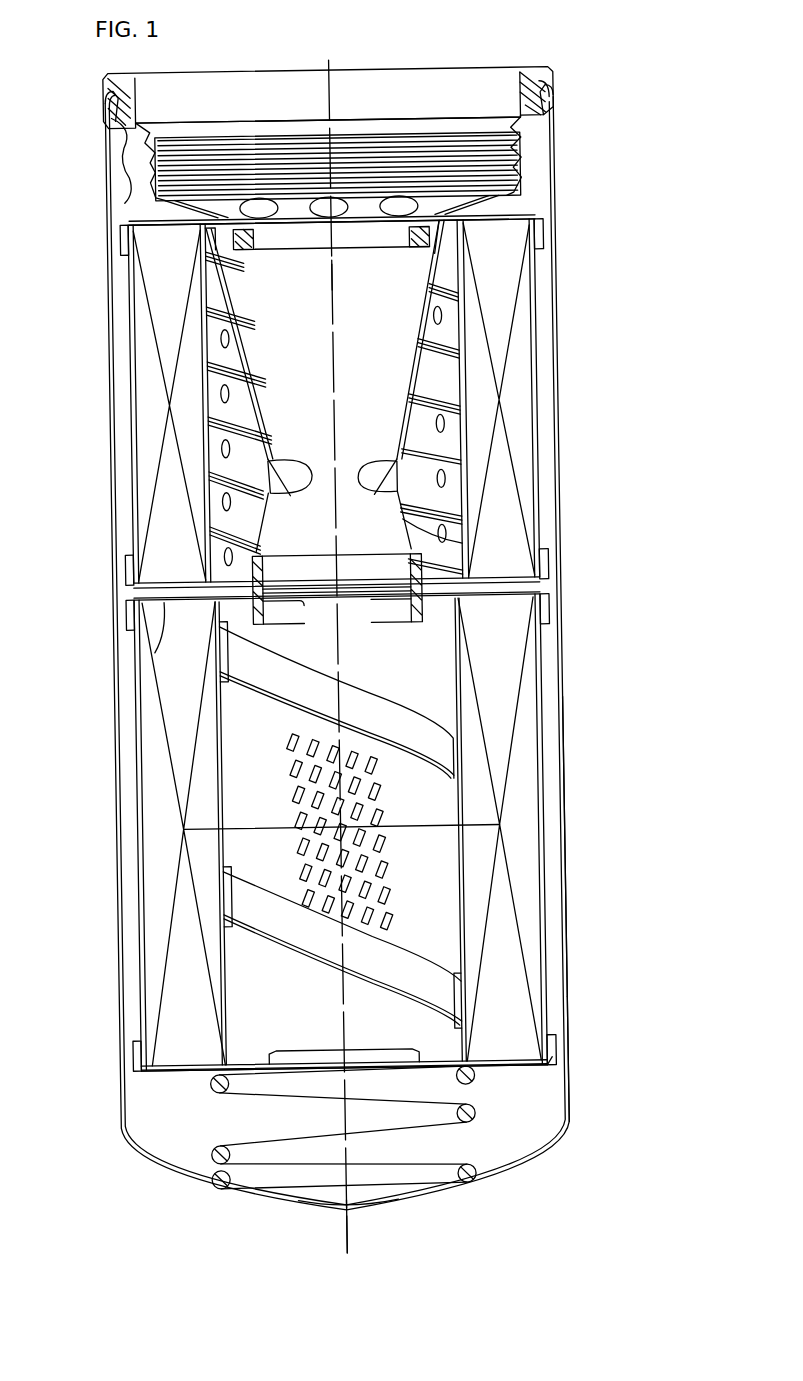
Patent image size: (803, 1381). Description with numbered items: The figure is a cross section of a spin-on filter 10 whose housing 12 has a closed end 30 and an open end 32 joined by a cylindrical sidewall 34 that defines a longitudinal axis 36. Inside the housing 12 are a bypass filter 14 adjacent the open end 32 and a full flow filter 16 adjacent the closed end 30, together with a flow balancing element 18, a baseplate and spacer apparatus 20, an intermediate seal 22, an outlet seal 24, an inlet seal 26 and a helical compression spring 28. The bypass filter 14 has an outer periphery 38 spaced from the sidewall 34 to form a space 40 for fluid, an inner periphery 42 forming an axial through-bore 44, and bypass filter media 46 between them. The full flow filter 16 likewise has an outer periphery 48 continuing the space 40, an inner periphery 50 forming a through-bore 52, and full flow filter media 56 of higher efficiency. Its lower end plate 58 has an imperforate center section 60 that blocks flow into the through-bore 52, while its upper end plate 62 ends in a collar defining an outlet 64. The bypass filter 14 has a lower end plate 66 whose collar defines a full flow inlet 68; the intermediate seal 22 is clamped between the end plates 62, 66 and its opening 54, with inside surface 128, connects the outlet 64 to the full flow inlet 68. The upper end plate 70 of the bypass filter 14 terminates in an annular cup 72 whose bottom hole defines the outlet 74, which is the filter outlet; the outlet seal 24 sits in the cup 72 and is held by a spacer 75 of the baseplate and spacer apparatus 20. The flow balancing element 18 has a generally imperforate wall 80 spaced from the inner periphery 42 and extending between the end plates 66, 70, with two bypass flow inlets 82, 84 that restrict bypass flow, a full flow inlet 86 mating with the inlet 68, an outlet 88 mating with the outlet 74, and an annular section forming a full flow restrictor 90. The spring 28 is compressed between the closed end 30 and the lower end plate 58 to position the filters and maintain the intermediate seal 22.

The spin-on filter 10 is at (600, 135).
The housing 12 is at (565, 787).
The bypass filter 14 is at (520, 430).
The full flow filter 16 is at (530, 745).
The flow balancing element 18 is at (250, 355).
The baseplate and spacer apparatus 20 is at (140, 190).
The intermediate seal 22 is at (372, 625).
The outlet seal 24 is at (265, 245).
The inlet seal 26 is at (520, 96).
The helical compression spring 28 is at (473, 1112).
The closed end 30 is at (515, 1165).
The open end 32 is at (560, 100).
The cylindrical sidewall 34 is at (565, 935).
The longitudinal axis 36 is at (343, 1228).
The outer periphery of the bypass filter 38 is at (540, 236).
The space 40 is at (542, 320).
The inner periphery of the bypass filter 42 is at (455, 378).
The through-bore of the bypass filter 44 is at (445, 432).
The bypass filter media 46 is at (150, 400).
The outer periphery of the full flow filter 48 is at (540, 608).
The inner periphery of the full flow filter 50 is at (457, 845).
The through-bore of the full flow filter 52 is at (248, 793).
The opening in the intermediate seal 54 is at (330, 612).
The full flow filter media 56 is at (170, 712).
The lower end plate of the full flow filter 58 is at (520, 1068).
The imperforate center section 60 is at (368, 1050).
The upper end plate of the full flow filter 62 is at (158, 598).
The outlet of the full flow filter 64 is at (305, 623).
The lower end plate of the bypass filter 66 is at (545, 590).
The full flow inlet of the bypass filter 68 is at (303, 553).
The upper end plate of the bypass filter 70 is at (530, 218).
The annular cup 72 is at (205, 237).
The outlet of the through-bore of the bypass filter 74 is at (368, 236).
The spacer 75 is at (520, 203).
The imperforate wall 80 is at (268, 404).
The bypass flow inlet 82 is at (305, 487).
The bypass flow inlet 84 is at (445, 490).
The full flow inlet of the flow balancing element 86 is at (440, 530).
The outlet of the flow balancing element 88 is at (420, 257).
The full flow restrictor 90 is at (345, 473).
The inside surface of the opening in the intermediate seal 128 is at (368, 553).